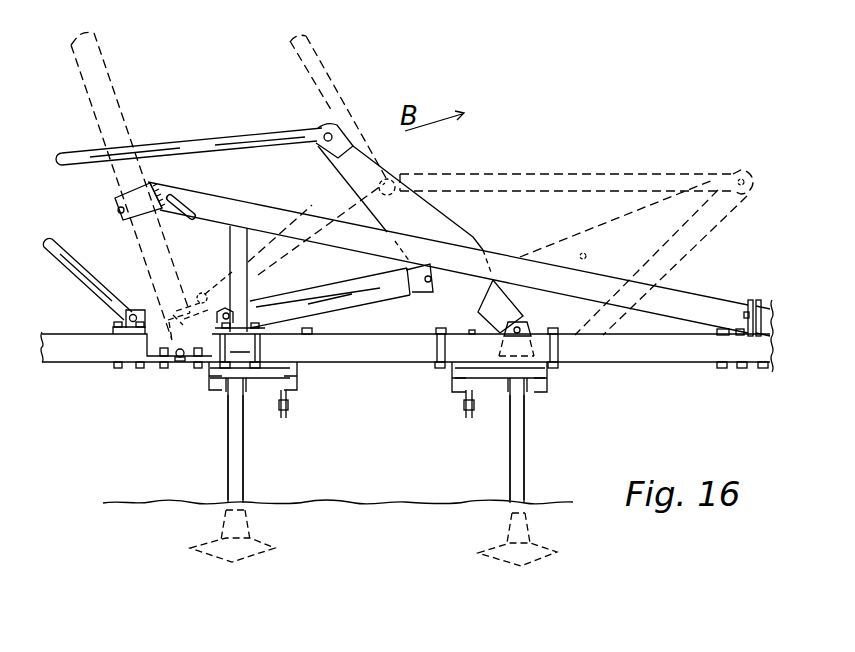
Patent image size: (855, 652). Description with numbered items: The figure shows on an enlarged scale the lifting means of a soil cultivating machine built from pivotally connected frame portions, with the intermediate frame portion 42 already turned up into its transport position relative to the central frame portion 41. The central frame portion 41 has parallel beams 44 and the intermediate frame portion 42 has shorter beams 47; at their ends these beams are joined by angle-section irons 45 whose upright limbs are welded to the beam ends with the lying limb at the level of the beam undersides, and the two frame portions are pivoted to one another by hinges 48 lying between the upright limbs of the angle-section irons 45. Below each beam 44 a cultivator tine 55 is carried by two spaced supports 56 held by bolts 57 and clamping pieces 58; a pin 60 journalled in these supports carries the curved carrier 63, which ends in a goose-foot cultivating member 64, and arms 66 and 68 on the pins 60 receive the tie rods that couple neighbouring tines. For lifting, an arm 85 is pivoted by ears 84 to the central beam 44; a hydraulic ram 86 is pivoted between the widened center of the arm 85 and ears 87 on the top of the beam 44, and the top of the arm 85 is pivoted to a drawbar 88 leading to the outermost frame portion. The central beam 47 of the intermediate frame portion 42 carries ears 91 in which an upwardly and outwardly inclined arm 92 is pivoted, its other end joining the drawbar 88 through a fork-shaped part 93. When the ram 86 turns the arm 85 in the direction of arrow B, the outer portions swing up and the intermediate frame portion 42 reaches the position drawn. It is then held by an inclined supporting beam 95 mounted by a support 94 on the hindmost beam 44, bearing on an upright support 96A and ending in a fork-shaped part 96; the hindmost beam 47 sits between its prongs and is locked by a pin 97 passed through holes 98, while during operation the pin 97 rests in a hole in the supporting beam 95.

The central frame portion 41 is at (656, 364).
The intermediate frame portion 42 is at (86, 326).
The beam 44 is at (398, 340).
The angle-section iron 45 is at (158, 363).
The beam 47 is at (112, 57).
The hinge 48 is at (178, 366).
The cultivator tine 55 is at (253, 491).
The support 56 is at (214, 380).
The bolt 57 is at (444, 333).
The clamping piece 58 is at (585, 318).
The pin 60 is at (266, 380).
The carrier 63 is at (227, 453).
The cultivating member 64 is at (212, 548).
The arm 66 is at (288, 412).
The arm 68 is at (463, 416).
The ear 84 is at (528, 292).
The arm 85 is at (470, 226).
The hydraulic ram 86 is at (340, 284).
The ear 87 is at (216, 318).
The drawbar 88 is at (212, 147).
The ear 91 is at (143, 309).
The arm 92 is at (74, 254).
The fork-shaped part 93 is at (361, 178).
The support 94 is at (750, 304).
The supporting beam 95 is at (764, 300).
The fork-shaped part 96 is at (130, 184).
The support 96A is at (231, 247).
The locking pin 97 is at (181, 201).
The hole 98 is at (113, 208).